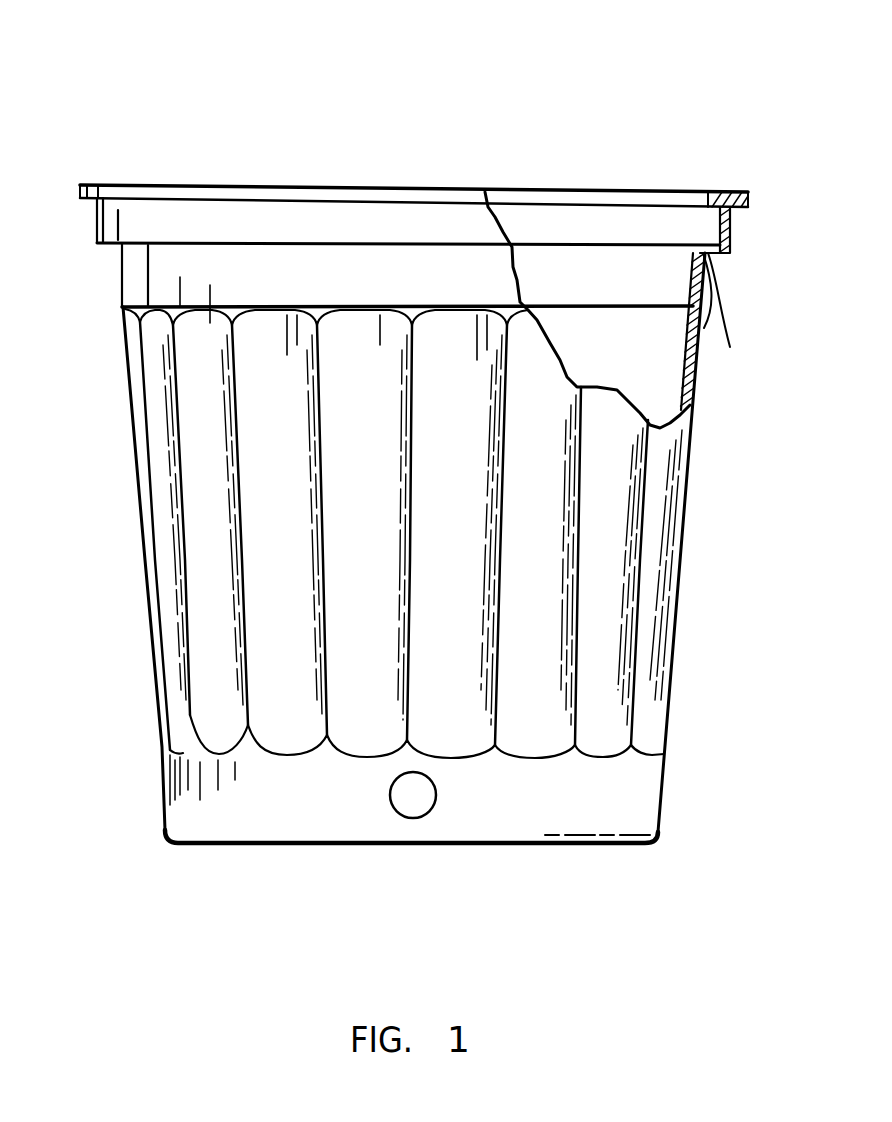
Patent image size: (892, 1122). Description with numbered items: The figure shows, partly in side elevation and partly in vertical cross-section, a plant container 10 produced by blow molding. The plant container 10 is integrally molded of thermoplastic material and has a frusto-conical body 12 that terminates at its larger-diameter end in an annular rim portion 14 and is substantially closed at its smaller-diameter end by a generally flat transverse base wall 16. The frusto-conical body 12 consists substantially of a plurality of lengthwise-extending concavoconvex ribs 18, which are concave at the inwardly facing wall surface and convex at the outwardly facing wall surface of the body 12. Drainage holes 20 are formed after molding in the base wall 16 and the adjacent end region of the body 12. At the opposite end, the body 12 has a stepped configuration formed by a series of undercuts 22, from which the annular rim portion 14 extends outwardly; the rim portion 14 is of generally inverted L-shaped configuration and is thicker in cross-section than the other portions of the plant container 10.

The plant container 10 is at (99, 78).
The frusto-conical body 12 is at (165, 553).
The annular rim portion 14 is at (80, 191).
The base wall 16 is at (521, 848).
The concavoconvex ribs 18 is at (620, 617).
The drainage holes 20 is at (407, 818).
The undercuts 22 is at (728, 340).